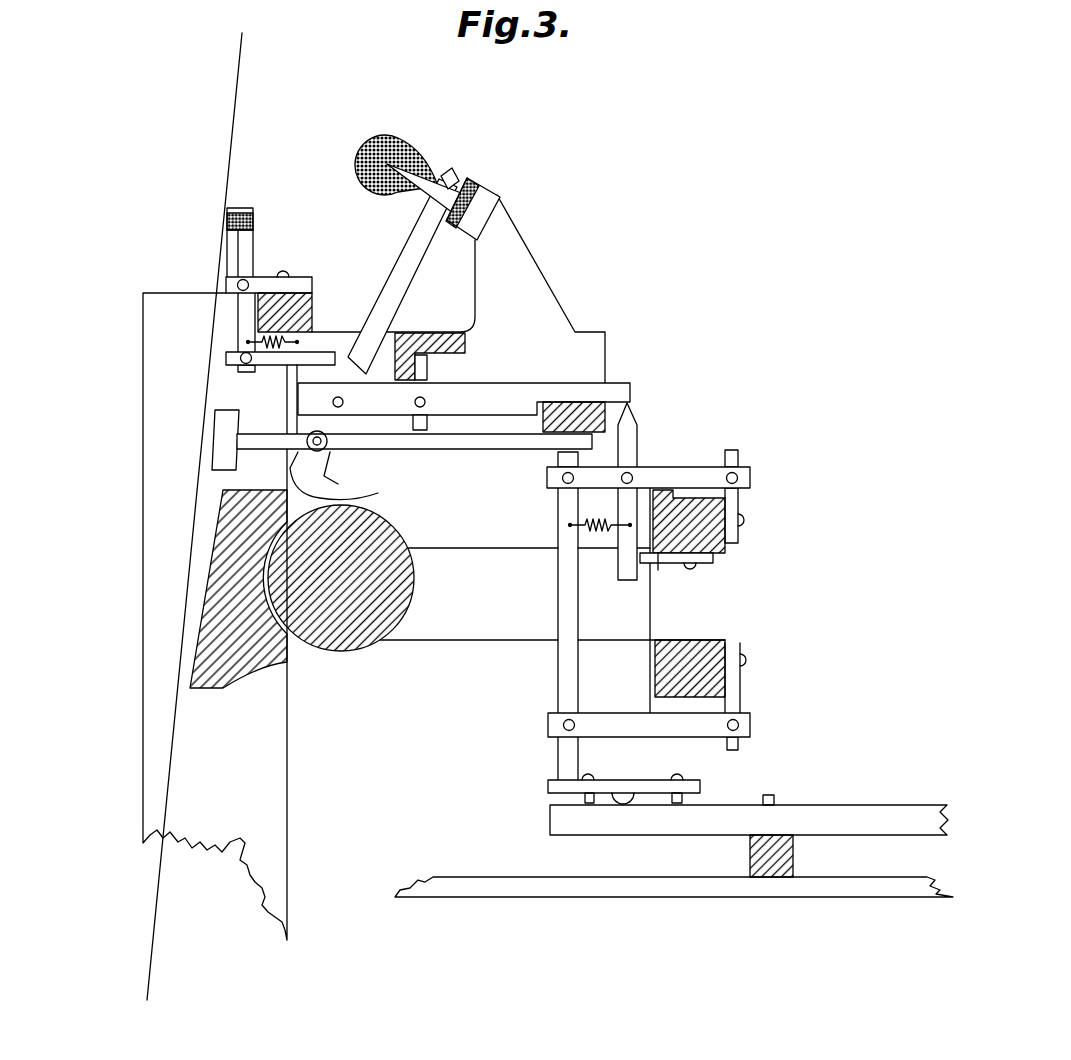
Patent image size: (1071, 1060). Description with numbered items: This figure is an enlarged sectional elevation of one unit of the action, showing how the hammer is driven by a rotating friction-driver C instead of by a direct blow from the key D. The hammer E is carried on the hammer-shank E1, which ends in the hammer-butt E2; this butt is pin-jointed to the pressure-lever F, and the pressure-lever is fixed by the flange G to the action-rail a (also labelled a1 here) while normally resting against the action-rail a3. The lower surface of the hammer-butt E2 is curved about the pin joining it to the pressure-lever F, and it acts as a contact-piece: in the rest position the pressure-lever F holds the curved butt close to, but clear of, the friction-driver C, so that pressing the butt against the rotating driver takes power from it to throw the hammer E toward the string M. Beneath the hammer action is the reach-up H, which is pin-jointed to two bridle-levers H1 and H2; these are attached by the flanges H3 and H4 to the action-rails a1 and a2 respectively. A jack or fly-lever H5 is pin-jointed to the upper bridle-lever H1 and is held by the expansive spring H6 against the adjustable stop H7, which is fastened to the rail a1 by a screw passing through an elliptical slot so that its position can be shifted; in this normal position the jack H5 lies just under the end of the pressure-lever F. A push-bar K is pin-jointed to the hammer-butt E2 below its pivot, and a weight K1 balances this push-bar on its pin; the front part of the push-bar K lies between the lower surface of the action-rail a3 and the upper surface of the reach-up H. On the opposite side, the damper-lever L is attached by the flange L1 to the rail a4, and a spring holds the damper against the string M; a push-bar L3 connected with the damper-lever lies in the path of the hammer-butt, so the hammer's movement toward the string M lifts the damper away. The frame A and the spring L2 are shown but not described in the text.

The frame A is at (222, 523).
The string M is at (235, 102).
The friction-driver C is at (382, 507).
The reach-up H is at (558, 590).
The damper-lever L is at (263, 218).
The flange L1 is at (307, 283).
The action-rail a4 is at (324, 305).
The spring L2 is at (258, 342).
The push-bar L3 is at (283, 367).
The weight K1 is at (227, 428).
The push-bar K is at (475, 445).
The hammer-butt E2 is at (320, 488).
The pressure-lever F is at (464, 401).
The action-rail a3 is at (608, 404).
The action-rail a is at (465, 341).
The flange G is at (428, 365).
The hammer E is at (399, 140).
The hammer-shank E1 is at (461, 178).
The jack or fly-lever H5 is at (637, 438).
The flange H3 is at (738, 510).
The bridle-lever H1 is at (750, 478).
The expansive spring H6 is at (600, 508).
The action-rail a1 is at (722, 549).
The adjustable stop H7 is at (669, 579).
The action-rail a2 is at (713, 643).
The flange H4 is at (734, 685).
The bridle-lever H2 is at (598, 723).
The key D is at (674, 835).